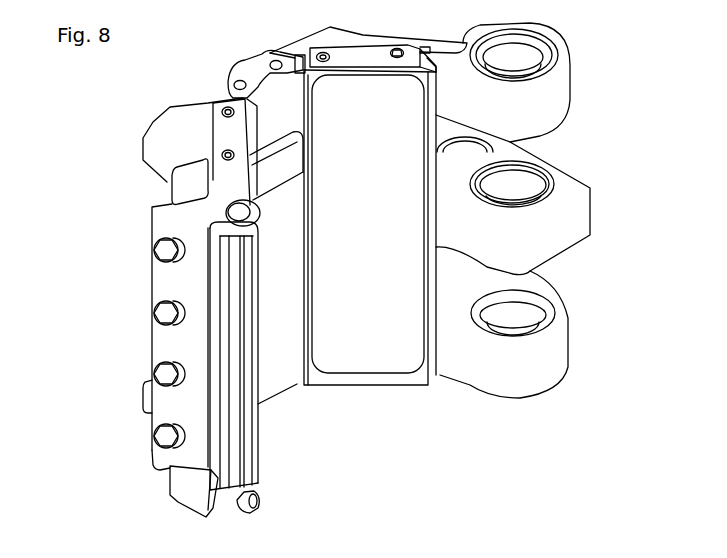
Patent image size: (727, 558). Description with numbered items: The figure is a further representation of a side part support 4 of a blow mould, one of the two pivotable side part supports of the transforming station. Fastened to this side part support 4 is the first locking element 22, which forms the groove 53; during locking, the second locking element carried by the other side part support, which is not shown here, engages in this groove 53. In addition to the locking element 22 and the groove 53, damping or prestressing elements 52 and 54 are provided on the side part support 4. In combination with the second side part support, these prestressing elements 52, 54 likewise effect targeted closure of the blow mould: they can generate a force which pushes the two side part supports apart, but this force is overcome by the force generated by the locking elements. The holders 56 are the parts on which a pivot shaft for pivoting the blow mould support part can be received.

The side part support 4 is at (121, 197).
The first locking element 22 is at (235, 428).
The prestressing element 52 is at (258, 506).
The groove 53 is at (217, 320).
The prestressing element 54 is at (240, 212).
The holders 56 is at (506, 368).